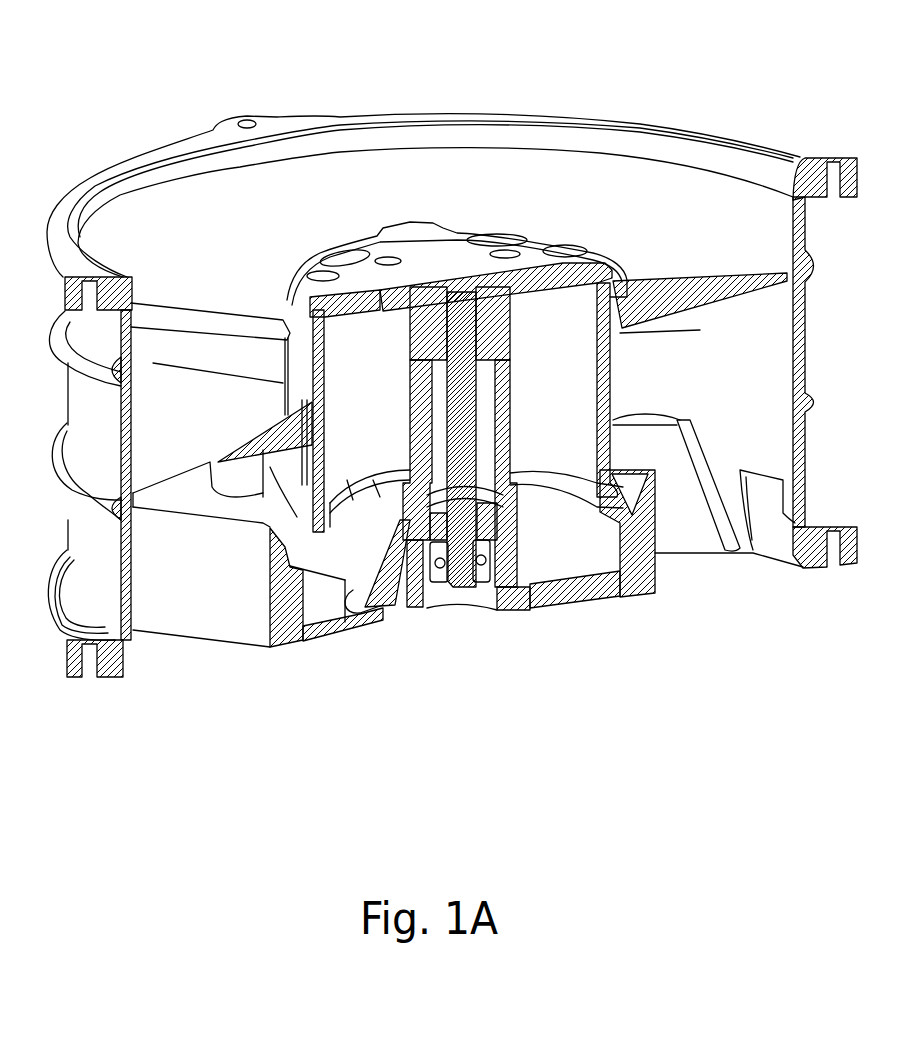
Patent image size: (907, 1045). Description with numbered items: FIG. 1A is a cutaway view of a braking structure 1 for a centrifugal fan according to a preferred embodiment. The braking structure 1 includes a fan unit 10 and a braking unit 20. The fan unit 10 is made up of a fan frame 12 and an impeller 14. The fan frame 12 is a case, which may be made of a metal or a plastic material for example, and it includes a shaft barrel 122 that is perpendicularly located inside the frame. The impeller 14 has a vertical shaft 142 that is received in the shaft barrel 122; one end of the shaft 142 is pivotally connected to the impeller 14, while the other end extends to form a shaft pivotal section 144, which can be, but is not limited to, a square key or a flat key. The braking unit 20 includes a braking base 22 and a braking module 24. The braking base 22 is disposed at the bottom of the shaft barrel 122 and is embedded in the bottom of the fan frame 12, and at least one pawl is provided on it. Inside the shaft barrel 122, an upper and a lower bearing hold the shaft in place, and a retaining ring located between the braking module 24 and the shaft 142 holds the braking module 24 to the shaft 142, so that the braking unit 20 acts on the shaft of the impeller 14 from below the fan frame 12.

The braking structure 1 is at (797, 103).
The fan unit 10 is at (613, 363).
The fan frame 12 is at (268, 597).
The shaft barrel 122 is at (517, 443).
The impeller 14 is at (653, 287).
The shaft 142 is at (607, 460).
The shaft pivotal section 144 is at (460, 590).
The braking unit 20 is at (348, 622).
The braking base 22 is at (527, 605).
The braking module 24 is at (433, 575).